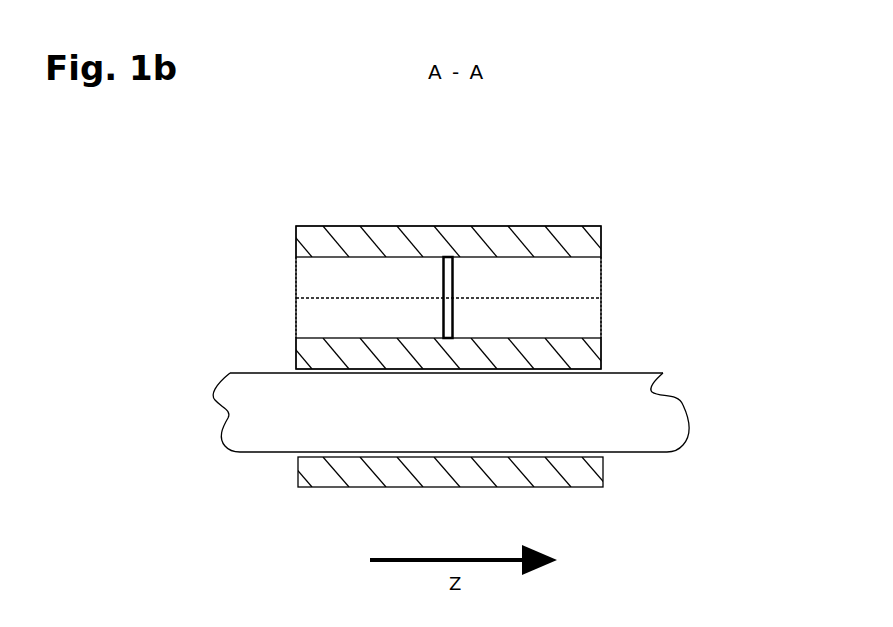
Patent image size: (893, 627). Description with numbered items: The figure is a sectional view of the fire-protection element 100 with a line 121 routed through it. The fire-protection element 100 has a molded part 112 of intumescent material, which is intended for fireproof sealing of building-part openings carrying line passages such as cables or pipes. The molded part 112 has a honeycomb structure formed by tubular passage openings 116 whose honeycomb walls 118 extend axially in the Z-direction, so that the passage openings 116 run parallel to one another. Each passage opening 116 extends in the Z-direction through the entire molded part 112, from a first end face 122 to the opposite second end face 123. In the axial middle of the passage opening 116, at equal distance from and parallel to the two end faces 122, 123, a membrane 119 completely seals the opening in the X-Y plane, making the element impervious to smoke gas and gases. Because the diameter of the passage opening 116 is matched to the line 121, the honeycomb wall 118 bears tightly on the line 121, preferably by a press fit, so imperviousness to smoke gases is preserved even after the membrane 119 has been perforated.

The fire-protection element 100 is at (296, 190).
The molded part 112 is at (377, 226).
The passage openings 116 is at (292, 298).
The honeycomb walls 118 is at (585, 273).
The membrane 119 is at (450, 257).
The line 121 is at (612, 432).
The first end face 122 is at (296, 358).
The second end face 123 is at (603, 347).